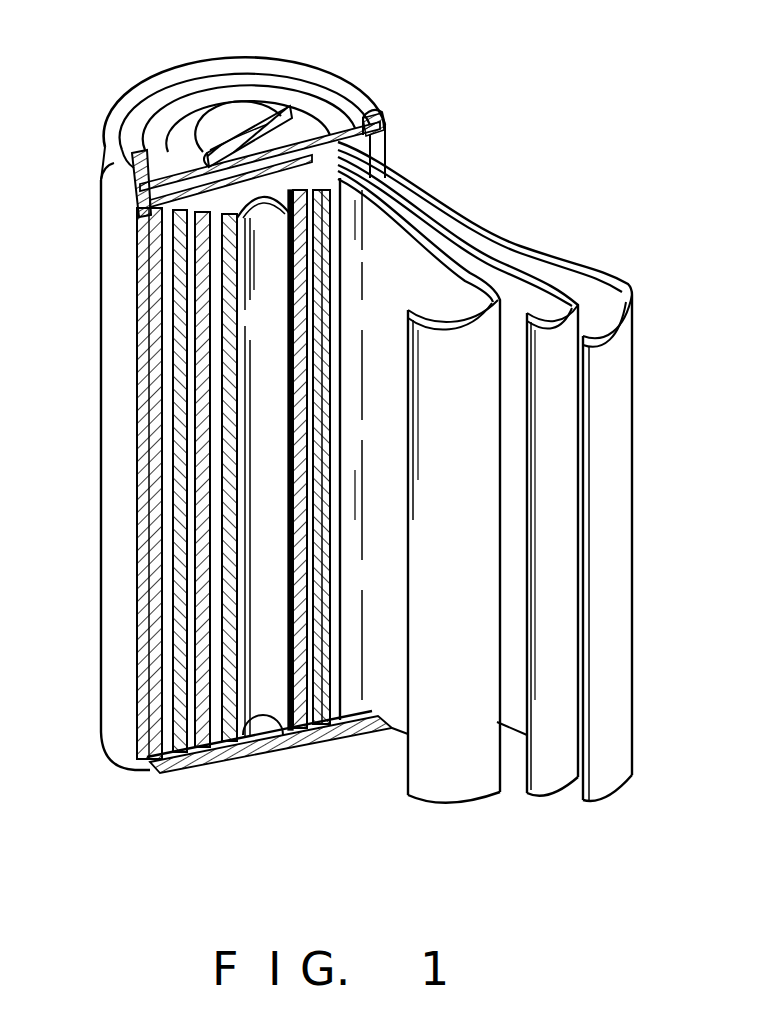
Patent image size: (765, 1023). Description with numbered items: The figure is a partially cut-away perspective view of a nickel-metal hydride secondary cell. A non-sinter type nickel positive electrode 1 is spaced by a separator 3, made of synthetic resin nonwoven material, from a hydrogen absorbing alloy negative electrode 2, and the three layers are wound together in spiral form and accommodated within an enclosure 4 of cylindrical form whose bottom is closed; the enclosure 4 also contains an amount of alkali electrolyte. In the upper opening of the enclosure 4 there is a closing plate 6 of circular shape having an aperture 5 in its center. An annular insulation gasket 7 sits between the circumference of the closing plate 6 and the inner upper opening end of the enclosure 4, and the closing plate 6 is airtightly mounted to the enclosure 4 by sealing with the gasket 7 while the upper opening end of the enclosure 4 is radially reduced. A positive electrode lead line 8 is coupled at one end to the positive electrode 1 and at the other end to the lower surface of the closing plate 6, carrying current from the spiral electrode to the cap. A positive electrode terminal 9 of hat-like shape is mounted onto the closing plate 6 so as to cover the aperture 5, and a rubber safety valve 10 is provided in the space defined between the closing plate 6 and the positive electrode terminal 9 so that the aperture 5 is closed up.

The non-sinter type nickel positive electrode 1 is at (452, 806).
The hydrogen absorbing alloy negative electrode 2 is at (610, 788).
The separator 3 is at (552, 784).
The enclosure 4 is at (383, 158).
The aperture 5 is at (300, 127).
The closing plate 6 is at (357, 112).
The annular insulation gasket 7 is at (380, 115).
The positive electrode lead line 8 is at (132, 142).
The positive electrode terminal 9 is at (268, 115).
The rubber safety valve 10 is at (236, 108).